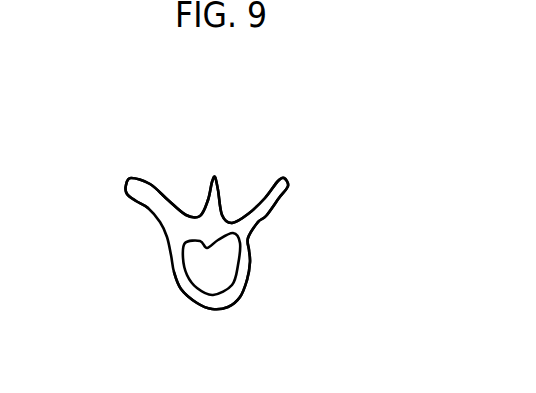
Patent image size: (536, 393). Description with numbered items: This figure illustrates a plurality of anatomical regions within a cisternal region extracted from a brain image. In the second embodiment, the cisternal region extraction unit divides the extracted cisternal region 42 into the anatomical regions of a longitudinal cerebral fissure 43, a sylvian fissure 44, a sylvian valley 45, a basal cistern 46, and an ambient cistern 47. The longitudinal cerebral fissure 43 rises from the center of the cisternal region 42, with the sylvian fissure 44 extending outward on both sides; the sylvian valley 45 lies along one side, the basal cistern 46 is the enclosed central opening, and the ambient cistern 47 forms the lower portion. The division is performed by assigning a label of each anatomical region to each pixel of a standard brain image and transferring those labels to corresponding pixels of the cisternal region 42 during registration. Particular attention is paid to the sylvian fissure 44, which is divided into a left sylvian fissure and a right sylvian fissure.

The cisternal region 42 is at (223, 118).
The longitudinal cerebral fissure 43 is at (217, 180).
The sylvian fissure 44 is at (133, 187).
The sylvian valley 45 is at (259, 221).
The basal cistern 46 is at (207, 241).
The ambient cistern 47 is at (209, 306).